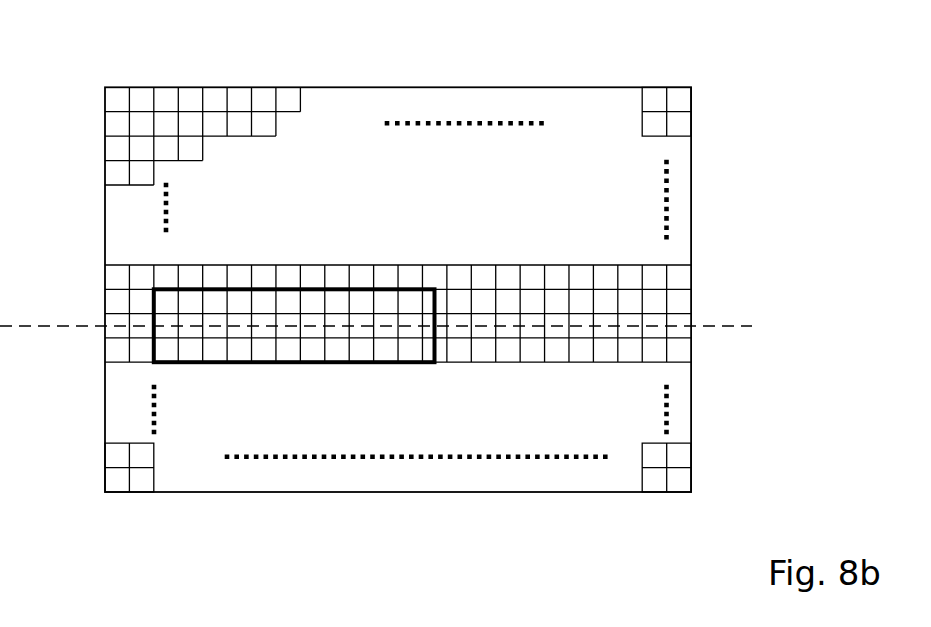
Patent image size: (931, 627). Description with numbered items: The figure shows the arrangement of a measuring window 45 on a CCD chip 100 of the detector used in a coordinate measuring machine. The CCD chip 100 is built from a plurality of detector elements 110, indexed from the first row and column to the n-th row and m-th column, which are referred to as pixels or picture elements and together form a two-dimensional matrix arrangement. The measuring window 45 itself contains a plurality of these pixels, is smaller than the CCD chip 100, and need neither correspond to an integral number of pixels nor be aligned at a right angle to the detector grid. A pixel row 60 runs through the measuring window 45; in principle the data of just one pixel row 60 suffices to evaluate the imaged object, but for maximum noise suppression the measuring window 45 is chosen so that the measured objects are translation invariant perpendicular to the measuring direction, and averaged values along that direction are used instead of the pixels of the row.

The CCD chip 100 is at (361, 103).
The detector elements 110 is at (118, 87).
The measuring window 45 is at (342, 365).
The pixel row 60 is at (55, 326).